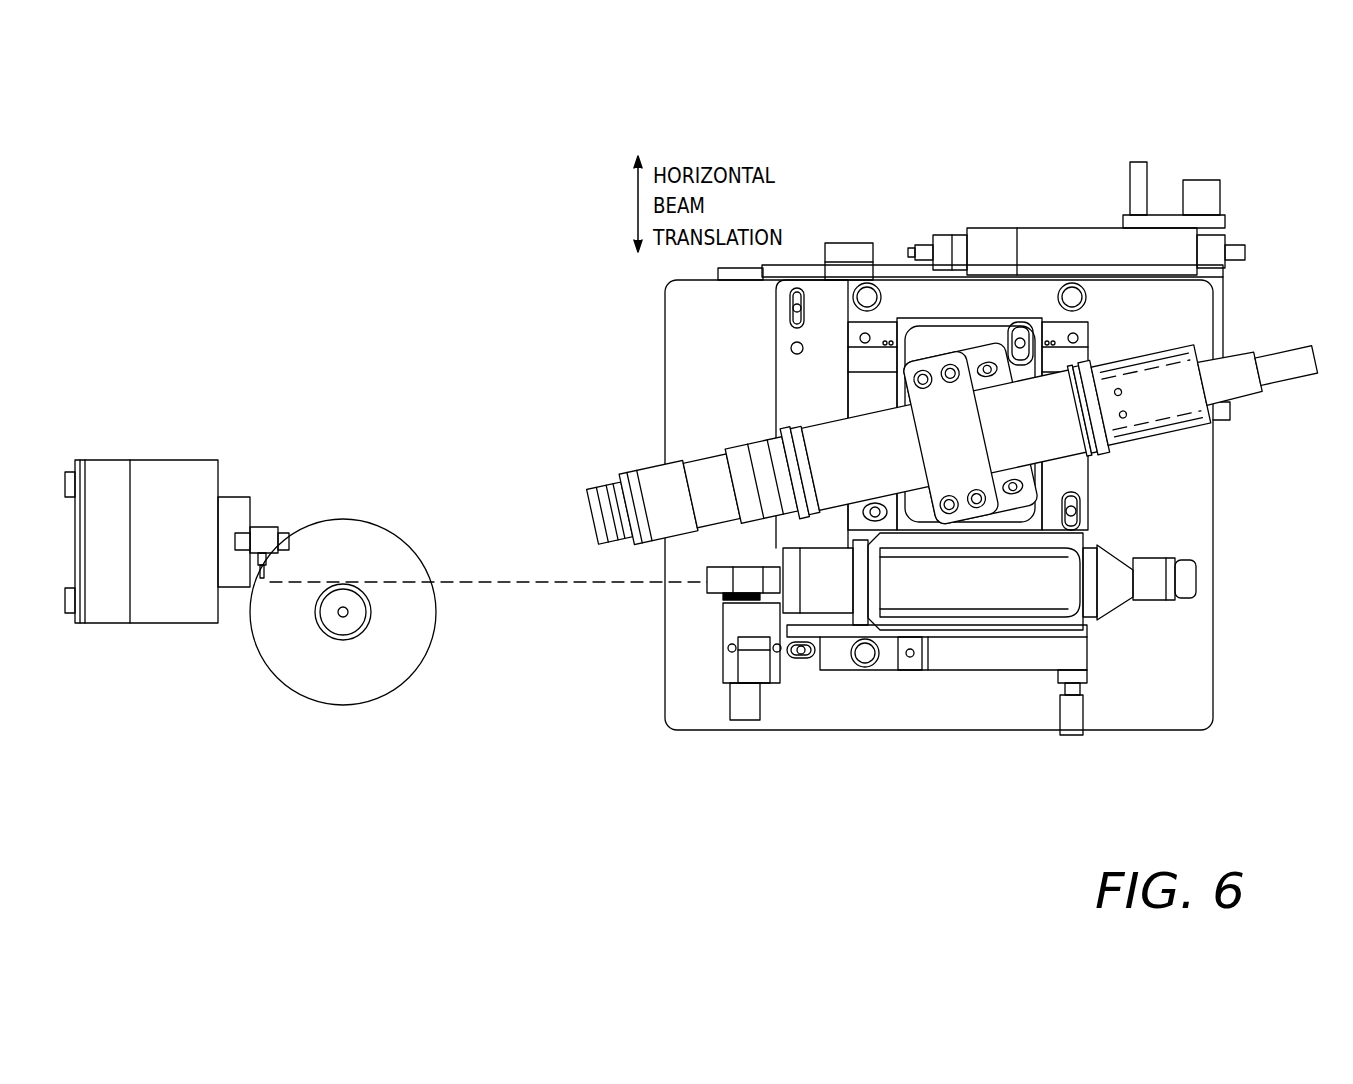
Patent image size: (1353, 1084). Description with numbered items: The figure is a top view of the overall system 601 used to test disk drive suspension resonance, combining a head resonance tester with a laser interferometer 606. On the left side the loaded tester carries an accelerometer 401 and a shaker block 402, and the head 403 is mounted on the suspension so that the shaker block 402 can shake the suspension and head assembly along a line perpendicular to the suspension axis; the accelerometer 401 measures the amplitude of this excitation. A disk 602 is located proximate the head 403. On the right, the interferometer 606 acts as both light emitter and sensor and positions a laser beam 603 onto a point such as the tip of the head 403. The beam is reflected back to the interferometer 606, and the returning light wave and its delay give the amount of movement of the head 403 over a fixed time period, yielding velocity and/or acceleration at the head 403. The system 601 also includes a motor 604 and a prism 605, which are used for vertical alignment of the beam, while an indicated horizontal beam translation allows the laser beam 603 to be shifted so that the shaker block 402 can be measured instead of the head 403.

The accelerometer 401 is at (243, 526).
The shaker block 402 is at (263, 524).
The head 403 is at (268, 575).
The loaded HRT / overall system 601 is at (908, 214).
The disk 602 is at (364, 676).
The laser beam 603 is at (611, 588).
The motor 604 is at (758, 720).
The prism 605 is at (712, 600).
The laser interferometer 606 is at (1093, 627).